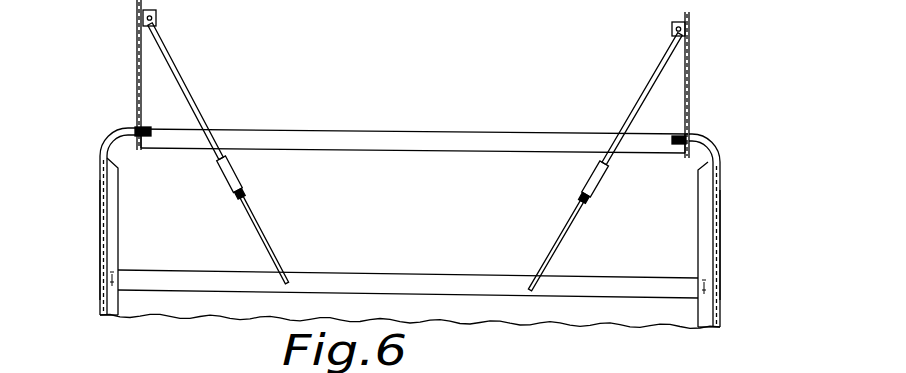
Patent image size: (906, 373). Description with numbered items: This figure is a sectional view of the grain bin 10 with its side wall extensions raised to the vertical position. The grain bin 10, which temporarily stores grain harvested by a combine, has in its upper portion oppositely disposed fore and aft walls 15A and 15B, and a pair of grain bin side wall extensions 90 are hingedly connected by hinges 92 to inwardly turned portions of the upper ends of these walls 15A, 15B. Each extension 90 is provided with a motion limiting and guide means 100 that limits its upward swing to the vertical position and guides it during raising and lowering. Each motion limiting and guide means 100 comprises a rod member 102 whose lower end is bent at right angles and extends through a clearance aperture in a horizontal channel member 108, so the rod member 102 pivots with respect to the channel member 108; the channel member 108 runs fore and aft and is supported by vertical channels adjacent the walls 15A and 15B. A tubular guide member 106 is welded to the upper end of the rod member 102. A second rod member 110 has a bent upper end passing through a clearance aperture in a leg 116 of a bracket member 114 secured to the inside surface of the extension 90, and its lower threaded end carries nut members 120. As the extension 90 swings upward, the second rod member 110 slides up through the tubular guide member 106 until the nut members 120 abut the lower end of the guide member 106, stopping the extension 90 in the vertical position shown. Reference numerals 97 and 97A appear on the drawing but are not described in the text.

The grain bin 10 is at (78, 238).
The fore wall 15A is at (722, 213).
The aft wall 15B is at (100, 178).
The grain bin side wall extension 90 is at (185, 372).
The hinge 92 is at (145, 150).
The floor member 97 is at (78, 372).
The floor support member 97A is at (142, 372).
The motion limiting and guide means 100 is at (415, 157).
The rod member 102 is at (266, 236).
The tubular guide member 106 is at (236, 166).
The horizontal channel member 108 is at (373, 285).
The second rod member 110 is at (181, 72).
The bracket member 114 is at (652, 359).
The leg 116 is at (550, 359).
The nut members 120 is at (234, 193).